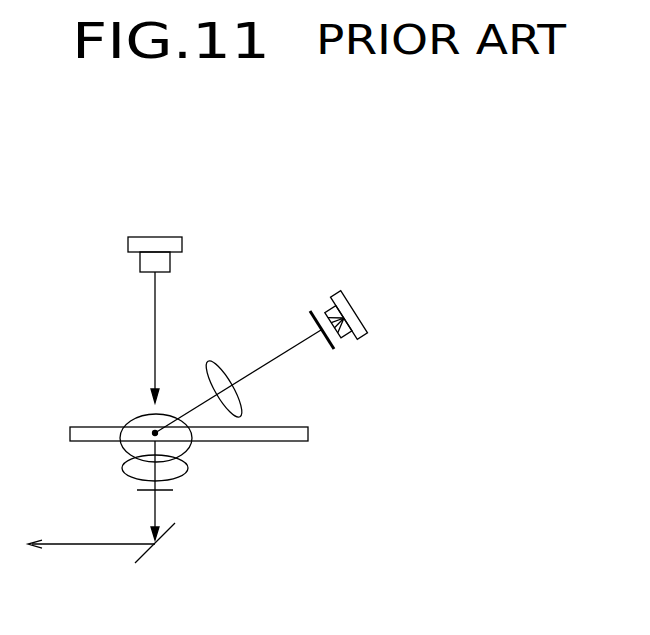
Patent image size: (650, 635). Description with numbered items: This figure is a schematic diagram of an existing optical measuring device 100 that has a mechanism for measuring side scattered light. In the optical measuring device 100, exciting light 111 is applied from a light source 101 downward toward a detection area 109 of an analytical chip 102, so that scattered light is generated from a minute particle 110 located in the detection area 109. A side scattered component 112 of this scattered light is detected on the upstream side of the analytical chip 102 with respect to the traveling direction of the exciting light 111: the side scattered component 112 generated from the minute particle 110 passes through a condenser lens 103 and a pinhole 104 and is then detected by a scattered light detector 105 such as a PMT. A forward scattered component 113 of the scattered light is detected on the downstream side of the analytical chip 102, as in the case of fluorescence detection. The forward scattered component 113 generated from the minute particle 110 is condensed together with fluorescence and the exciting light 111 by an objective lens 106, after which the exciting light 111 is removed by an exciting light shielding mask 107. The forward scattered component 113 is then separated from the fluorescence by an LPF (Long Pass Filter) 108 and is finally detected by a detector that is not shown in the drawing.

The optical measuring device 100 is at (334, 170).
The light source 101 is at (128, 245).
The analytical chip 102 is at (309, 433).
The condenser lens 103 is at (212, 360).
The pinhole 104 is at (313, 312).
The scattered light detector 105 is at (337, 291).
The objective lens 106 is at (189, 470).
The exciting light shielding mask 107 is at (174, 491).
The LPF (Long Pass Filter) 108 is at (176, 532).
The detection area 109 is at (121, 453).
The minute particle 110 is at (151, 431).
The exciting light 111 is at (153, 336).
The side scattered component 112 is at (267, 362).
The forward scattered component 113 is at (80, 546).